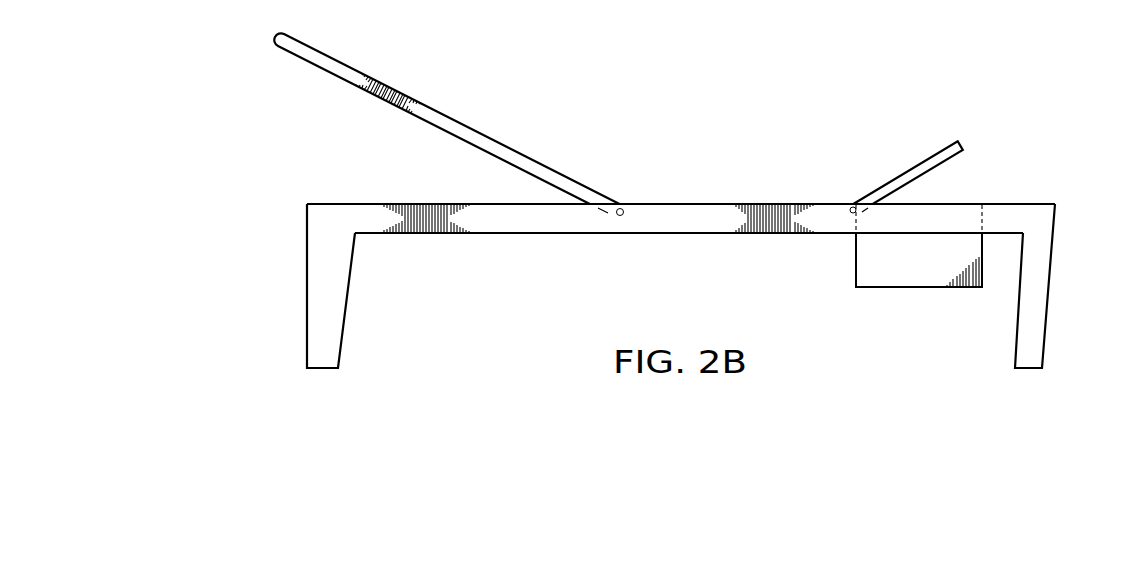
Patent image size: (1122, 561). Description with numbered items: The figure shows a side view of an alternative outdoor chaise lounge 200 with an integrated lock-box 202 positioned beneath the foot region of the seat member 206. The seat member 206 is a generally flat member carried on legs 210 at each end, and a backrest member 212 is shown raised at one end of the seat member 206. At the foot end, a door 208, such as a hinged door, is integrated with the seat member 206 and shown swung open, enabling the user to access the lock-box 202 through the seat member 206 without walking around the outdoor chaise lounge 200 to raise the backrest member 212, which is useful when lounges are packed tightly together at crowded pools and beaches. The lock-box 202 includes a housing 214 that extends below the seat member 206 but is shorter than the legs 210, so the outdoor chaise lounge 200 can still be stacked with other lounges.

The outdoor chaise lounge 200 is at (696, 185).
The lock-box 202 is at (870, 147).
The seat member 206 is at (697, 204).
The door 208 is at (937, 152).
The legs 210 is at (347, 300).
The backrest member 212 is at (467, 127).
The housing 214 is at (855, 268).